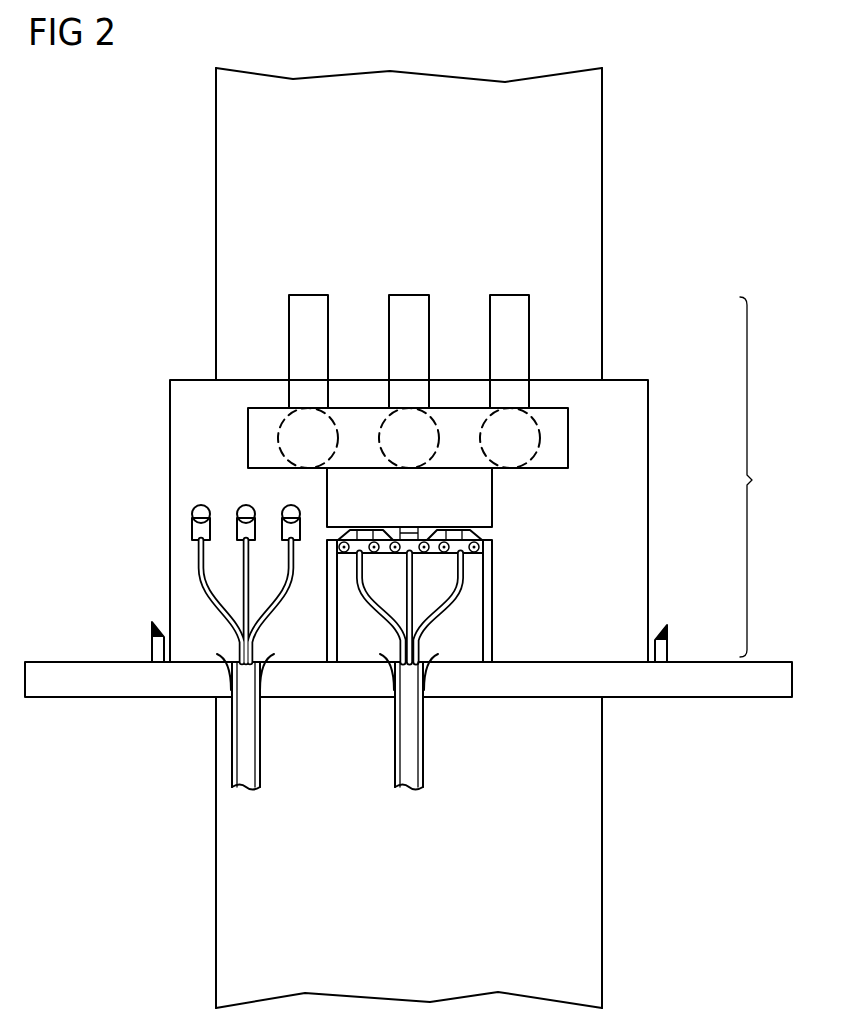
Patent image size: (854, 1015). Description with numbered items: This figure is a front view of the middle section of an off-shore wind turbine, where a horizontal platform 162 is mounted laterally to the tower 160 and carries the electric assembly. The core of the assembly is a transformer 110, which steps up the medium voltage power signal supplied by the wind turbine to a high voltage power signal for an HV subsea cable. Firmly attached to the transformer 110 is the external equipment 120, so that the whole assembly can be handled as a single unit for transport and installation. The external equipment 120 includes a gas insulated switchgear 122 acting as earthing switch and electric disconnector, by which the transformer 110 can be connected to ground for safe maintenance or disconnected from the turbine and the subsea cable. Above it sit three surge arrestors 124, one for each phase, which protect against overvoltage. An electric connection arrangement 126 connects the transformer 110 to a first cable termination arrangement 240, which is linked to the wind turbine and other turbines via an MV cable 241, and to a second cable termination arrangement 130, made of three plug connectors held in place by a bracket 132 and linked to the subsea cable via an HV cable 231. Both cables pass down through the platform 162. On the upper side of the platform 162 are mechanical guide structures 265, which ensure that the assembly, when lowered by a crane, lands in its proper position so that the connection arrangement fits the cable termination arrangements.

The transformer 110 is at (192, 458).
The external equipment 120 is at (770, 477).
The gas insulated switchgear 122 is at (568, 442).
The surge arrestors 124 is at (310, 302).
The electric connection arrangement 126 is at (476, 503).
The second cable termination arrangement 130 is at (363, 578).
The bracket 132 is at (487, 628).
The tower 160 is at (563, 172).
The platform 162 is at (80, 688).
The HV cable 231 is at (412, 745).
The first cable termination arrangement 240 is at (290, 587).
The MV cable 241 is at (250, 745).
The mechanical guide structures 265 is at (152, 645).